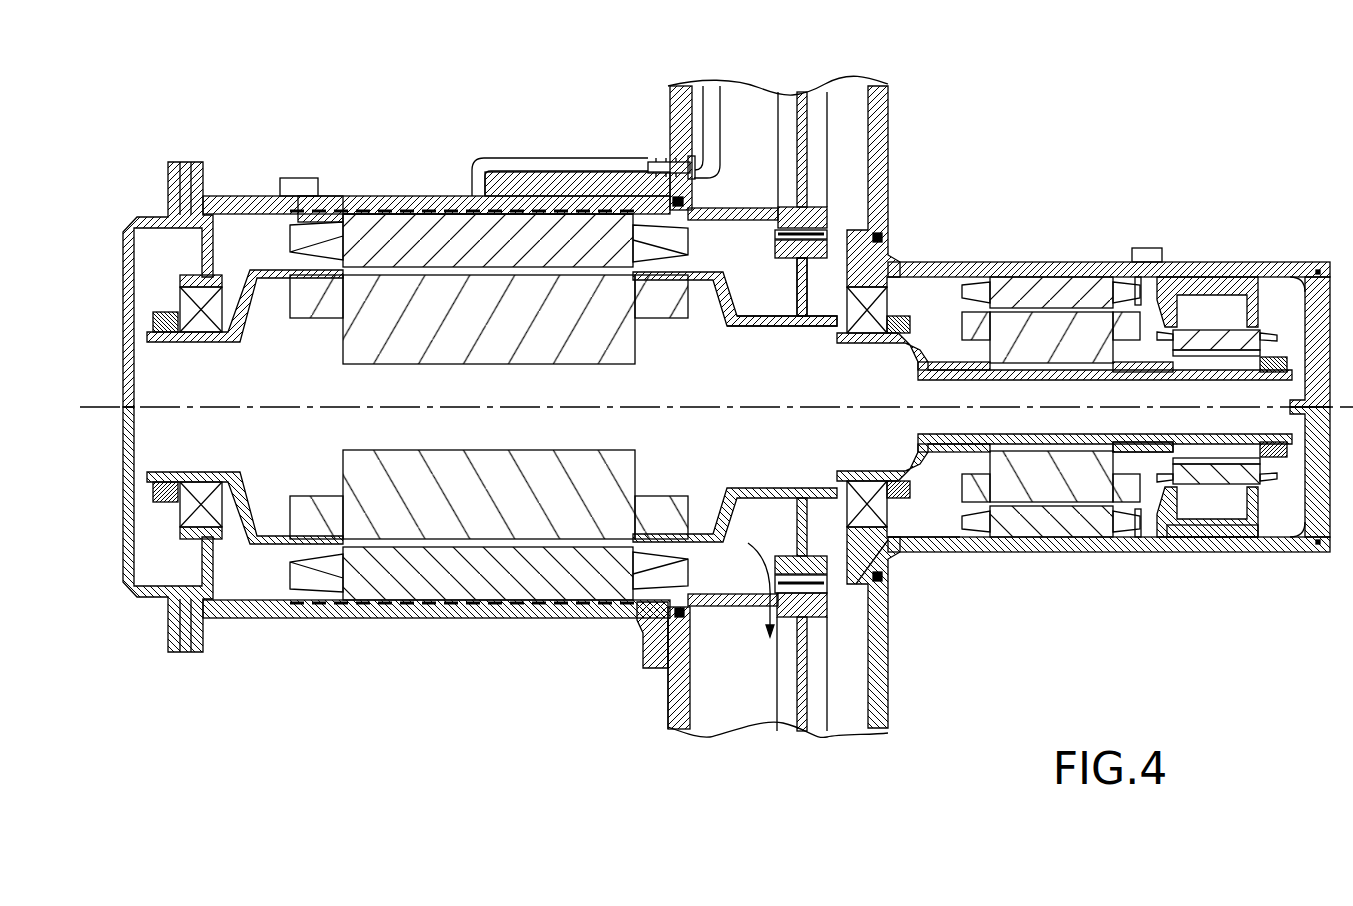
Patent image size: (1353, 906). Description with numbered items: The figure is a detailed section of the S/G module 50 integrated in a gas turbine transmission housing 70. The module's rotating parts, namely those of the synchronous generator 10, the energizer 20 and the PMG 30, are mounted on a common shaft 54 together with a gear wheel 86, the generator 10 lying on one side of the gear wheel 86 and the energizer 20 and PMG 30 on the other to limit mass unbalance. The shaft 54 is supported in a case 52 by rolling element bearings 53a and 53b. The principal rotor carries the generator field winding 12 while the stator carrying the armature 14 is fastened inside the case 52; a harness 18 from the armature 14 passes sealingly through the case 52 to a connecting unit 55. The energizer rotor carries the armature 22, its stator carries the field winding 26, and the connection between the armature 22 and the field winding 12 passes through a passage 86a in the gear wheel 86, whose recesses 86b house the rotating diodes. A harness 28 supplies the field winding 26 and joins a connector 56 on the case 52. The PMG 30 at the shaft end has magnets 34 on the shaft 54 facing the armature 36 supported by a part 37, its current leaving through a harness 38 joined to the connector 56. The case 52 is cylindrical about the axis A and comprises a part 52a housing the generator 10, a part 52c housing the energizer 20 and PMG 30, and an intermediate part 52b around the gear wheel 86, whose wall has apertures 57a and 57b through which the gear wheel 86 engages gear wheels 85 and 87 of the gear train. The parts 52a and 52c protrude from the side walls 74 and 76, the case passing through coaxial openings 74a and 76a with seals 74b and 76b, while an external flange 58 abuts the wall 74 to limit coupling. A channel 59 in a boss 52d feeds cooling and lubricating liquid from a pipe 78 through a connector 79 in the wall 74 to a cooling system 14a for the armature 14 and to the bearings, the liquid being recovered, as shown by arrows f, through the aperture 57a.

The axis A is at (108, 405).
The synchronous generator 10 is at (284, 576).
The generator field winding 12 is at (530, 525).
The armature 14 is at (418, 565).
The cooling system for the armature 14a is at (420, 213).
The harness 18 is at (320, 214).
The energizer 20 is at (957, 295).
The armature of the energizer 22 is at (1075, 492).
The field winding of the energizer 26 is at (1048, 290).
The harness 28 is at (1110, 283).
The PMG 30 is at (1272, 318).
The magnets 34 is at (1187, 448).
The armature of the PMG 36 is at (1218, 490).
The part 37 is at (1205, 540).
The harness 38 is at (1178, 290).
The S/G module 50 is at (456, 92).
The case 52 is at (468, 620).
The part of the case 52a is at (378, 620).
The intermediate part 52b is at (760, 604).
The part of the case 52c is at (1120, 553).
The boss 52d is at (585, 178).
The rolling element bearing 53a is at (195, 487).
The rolling element bearing 53b is at (877, 487).
The shaft 54 is at (230, 322).
The connecting unit 55 is at (295, 182).
The connector 56 is at (1143, 248).
The aperture 57a is at (876, 590).
The aperture 57b is at (778, 213).
The external flange 58 is at (648, 640).
The channel 59 is at (550, 158).
The transmission housing 70 is at (750, 740).
The side wall 74 is at (681, 99).
The opening 74a is at (700, 608).
The seal 74b is at (690, 620).
The side wall 76 is at (887, 108).
The opening 76a is at (905, 560).
The seal 76b is at (905, 583).
The pipe 78 is at (716, 108).
The connector 79 is at (660, 160).
The gear wheel 85 is at (828, 612).
The gear wheel 86 is at (830, 240).
The passage 86a is at (797, 283).
The recess 86b is at (812, 300).
The gear wheel 87 is at (832, 208).
The arrows f is at (847, 614).